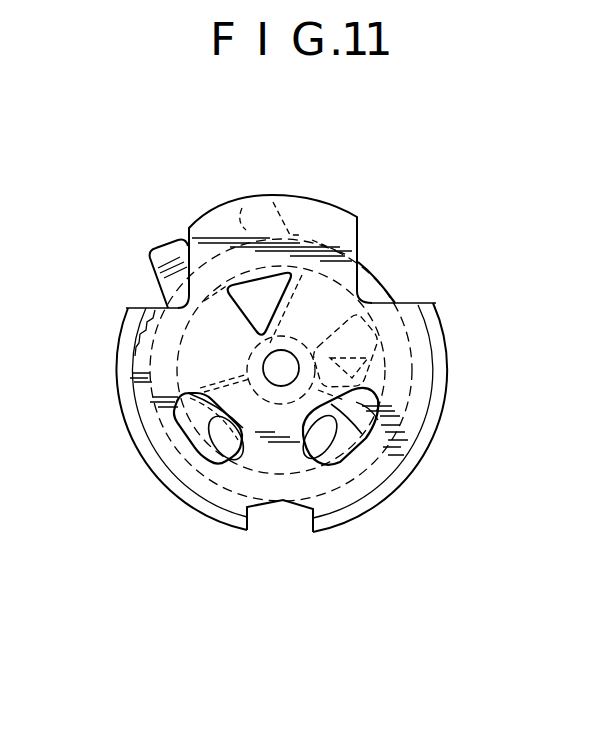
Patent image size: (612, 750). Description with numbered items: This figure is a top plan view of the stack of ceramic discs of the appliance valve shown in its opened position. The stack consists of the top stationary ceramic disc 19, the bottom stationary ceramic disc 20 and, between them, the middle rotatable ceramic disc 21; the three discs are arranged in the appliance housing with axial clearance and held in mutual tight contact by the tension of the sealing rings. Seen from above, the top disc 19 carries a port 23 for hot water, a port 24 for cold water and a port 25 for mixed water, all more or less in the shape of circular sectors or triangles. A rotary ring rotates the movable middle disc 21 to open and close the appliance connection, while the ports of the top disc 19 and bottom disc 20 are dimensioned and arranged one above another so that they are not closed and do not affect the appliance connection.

The top stationary ceramic disc 19 is at (221, 213).
The bottom stationary ceramic disc 20 is at (132, 307).
The middle rotatable ceramic disc 21 is at (162, 248).
The port for hot water 23 is at (200, 462).
The port for cold water 24 is at (352, 409).
The port for mixed water 25 is at (272, 286).